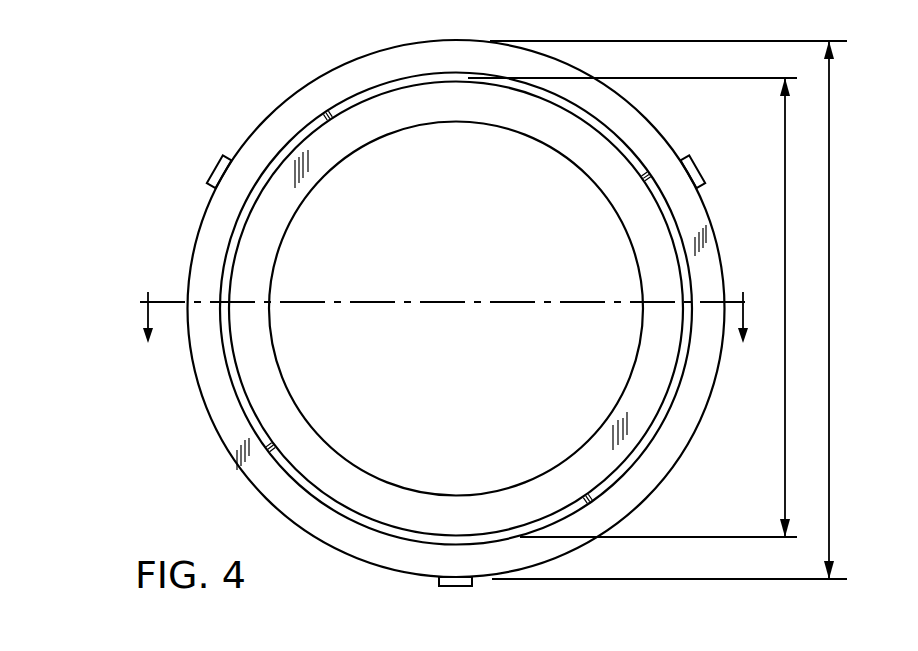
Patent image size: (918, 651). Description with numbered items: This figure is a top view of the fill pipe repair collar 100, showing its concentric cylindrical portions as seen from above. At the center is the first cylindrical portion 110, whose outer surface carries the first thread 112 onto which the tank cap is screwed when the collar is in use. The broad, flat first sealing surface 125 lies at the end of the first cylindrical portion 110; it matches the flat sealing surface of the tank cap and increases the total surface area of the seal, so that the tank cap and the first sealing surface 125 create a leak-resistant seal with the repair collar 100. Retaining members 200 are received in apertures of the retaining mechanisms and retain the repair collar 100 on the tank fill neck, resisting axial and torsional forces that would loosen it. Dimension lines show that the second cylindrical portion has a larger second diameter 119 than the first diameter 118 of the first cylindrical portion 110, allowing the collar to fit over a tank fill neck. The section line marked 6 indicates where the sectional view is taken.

The repair collar 100 is at (176, 72).
The first cylindrical portion 110 is at (567, 135).
The first thread 112 is at (248, 414).
The first sealing surface 125 is at (357, 128).
The retaining member 200 is at (212, 165).
The first diameter 118 is at (784, 153).
The second diameter 119 is at (827, 530).
The section line 6- 6 is at (446, 333).